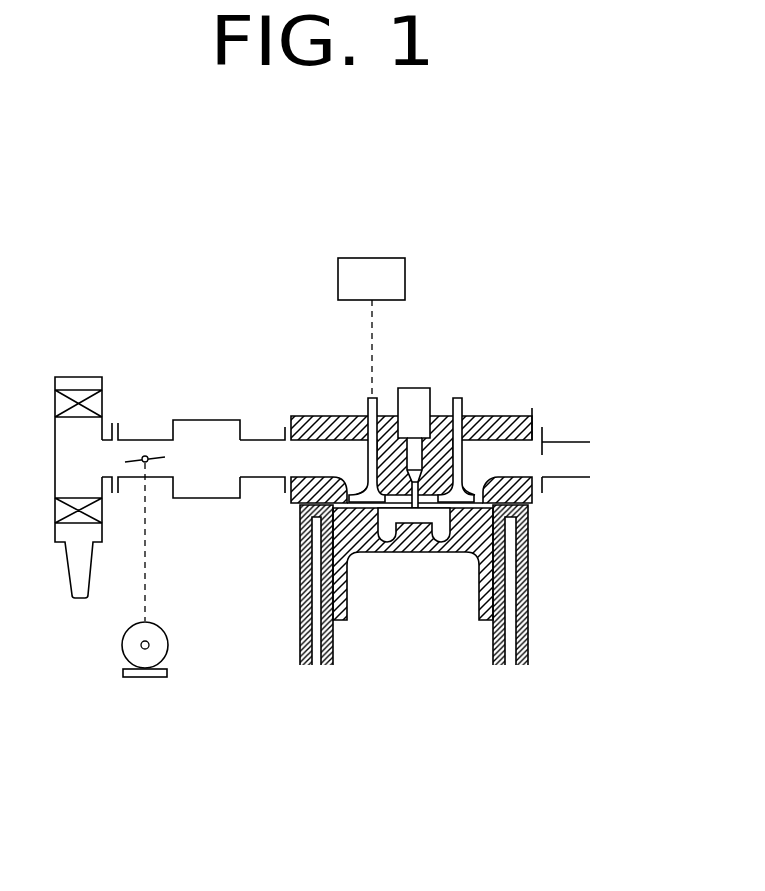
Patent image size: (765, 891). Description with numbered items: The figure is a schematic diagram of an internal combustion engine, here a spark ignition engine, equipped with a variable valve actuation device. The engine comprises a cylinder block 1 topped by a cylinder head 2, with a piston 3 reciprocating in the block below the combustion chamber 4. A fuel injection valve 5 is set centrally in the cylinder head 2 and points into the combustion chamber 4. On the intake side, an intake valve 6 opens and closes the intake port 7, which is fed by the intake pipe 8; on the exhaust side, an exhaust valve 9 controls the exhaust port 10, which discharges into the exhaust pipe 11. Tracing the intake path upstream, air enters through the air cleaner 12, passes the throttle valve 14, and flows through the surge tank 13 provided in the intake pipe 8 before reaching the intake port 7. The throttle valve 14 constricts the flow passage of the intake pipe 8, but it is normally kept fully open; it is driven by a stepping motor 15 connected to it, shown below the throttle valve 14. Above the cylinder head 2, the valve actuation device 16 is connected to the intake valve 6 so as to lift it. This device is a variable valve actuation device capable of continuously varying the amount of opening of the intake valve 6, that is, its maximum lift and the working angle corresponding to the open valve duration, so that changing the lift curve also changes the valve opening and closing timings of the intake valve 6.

The cylinder block 1 is at (300, 612).
The cylinder head 2 is at (531, 408).
The piston 3 is at (408, 545).
The combustion chamber 4 is at (447, 536).
The fuel injection valve 5 is at (410, 388).
The intake valve 6 is at (367, 406).
The intake port 7 is at (313, 452).
The intake pipe 8 is at (262, 452).
The exhaust valve 9 is at (461, 396).
The exhaust port 10 is at (490, 444).
The exhaust pipe 11 is at (546, 428).
The air cleaner 12 is at (77, 378).
The surge tank 13 is at (203, 423).
The throttle valve 14 is at (138, 461).
The stepping motor 15 is at (158, 652).
The valve actuation device 16 is at (375, 268).